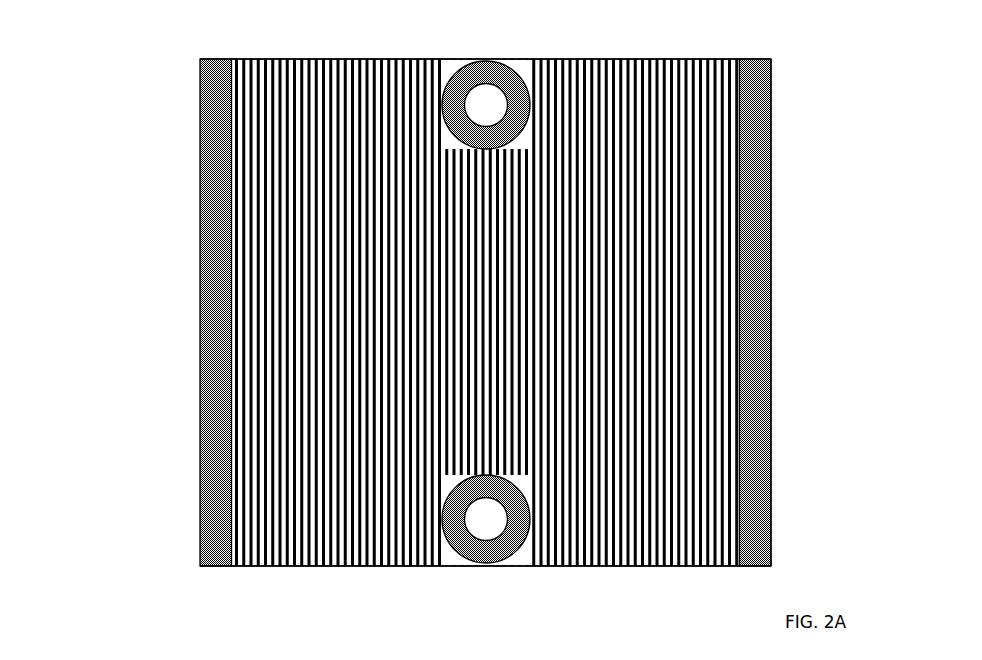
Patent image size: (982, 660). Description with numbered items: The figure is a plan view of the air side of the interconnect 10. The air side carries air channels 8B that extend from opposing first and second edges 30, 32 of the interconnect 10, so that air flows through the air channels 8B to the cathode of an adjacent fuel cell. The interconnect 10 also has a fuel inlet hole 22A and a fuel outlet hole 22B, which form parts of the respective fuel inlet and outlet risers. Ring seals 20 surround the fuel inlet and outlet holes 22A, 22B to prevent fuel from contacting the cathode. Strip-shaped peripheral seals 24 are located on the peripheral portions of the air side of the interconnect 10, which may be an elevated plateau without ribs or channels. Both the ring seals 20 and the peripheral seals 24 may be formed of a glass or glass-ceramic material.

The interconnect 10 is at (165, 108).
The air channels 8B is at (652, 400).
The ring seals 20 is at (448, 537).
The fuel inlet hole 22A is at (476, 96).
The fuel outlet hole 22B is at (480, 513).
The strip-shaped peripheral seals 24 is at (764, 303).
The first edge 30 is at (618, 52).
The second edge 32 is at (663, 550).